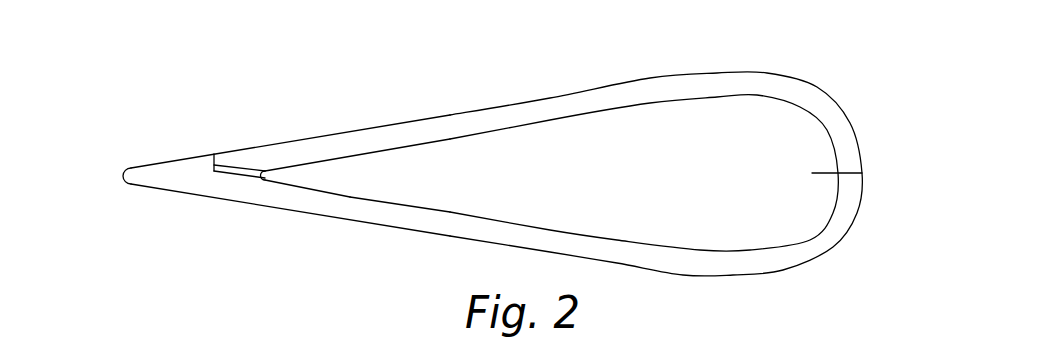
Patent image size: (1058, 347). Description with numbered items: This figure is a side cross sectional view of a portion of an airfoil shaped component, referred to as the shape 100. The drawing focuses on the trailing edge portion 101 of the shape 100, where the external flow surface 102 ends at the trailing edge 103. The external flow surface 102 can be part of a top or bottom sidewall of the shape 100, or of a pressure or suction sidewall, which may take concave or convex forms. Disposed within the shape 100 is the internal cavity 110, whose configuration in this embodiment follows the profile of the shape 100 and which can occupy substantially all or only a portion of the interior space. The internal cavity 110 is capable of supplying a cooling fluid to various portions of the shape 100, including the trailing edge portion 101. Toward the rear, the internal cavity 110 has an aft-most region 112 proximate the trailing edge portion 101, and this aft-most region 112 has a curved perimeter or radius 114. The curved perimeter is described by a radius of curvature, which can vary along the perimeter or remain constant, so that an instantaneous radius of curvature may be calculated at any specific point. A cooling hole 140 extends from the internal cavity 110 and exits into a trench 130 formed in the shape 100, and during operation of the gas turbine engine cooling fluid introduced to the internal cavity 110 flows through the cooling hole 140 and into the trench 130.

The shape 100 is at (478, 160).
The trailing edge portion 101 is at (158, 188).
The external flow surface 102 is at (380, 126).
The trailing edge 103 is at (124, 173).
The internal cavity 110 is at (502, 158).
The aft-most region 112 is at (288, 178).
The curved perimeter or radius 114 is at (260, 168).
The trench 130 is at (212, 160).
The cooling hole 140 is at (237, 175).